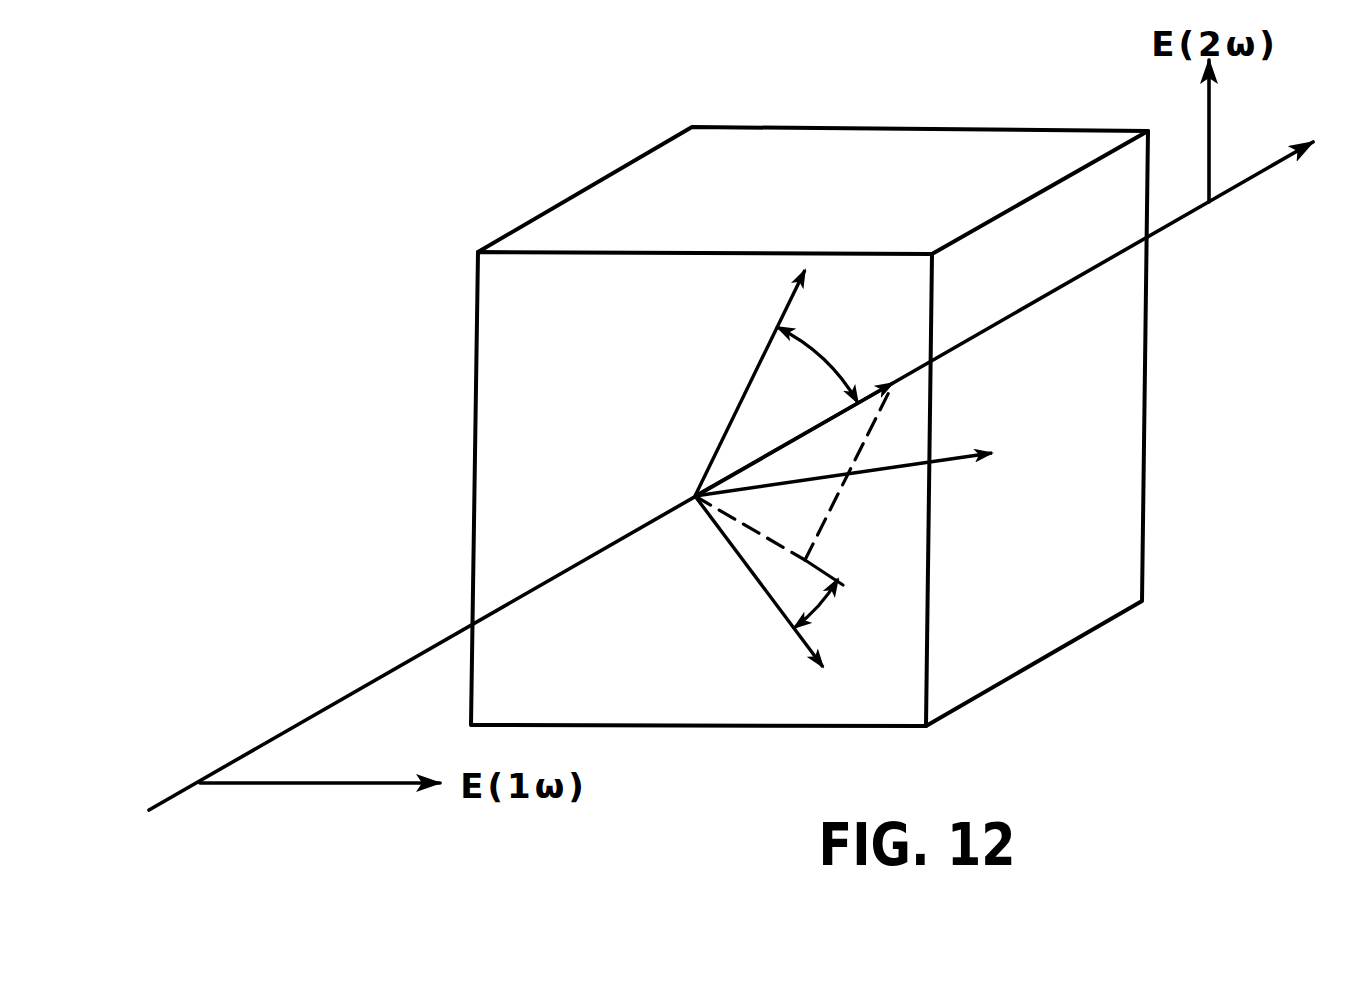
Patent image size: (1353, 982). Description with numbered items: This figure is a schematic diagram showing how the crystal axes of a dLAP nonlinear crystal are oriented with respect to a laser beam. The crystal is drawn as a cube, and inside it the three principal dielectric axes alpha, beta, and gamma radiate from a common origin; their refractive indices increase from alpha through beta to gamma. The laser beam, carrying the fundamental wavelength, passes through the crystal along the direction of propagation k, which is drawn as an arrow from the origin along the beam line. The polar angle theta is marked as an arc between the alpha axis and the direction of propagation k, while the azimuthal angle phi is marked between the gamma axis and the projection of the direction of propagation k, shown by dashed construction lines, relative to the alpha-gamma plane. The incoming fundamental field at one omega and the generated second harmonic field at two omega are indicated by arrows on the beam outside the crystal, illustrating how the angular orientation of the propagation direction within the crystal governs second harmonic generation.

The direction of propagation of the fundamental wavelength k is at (796, 418).